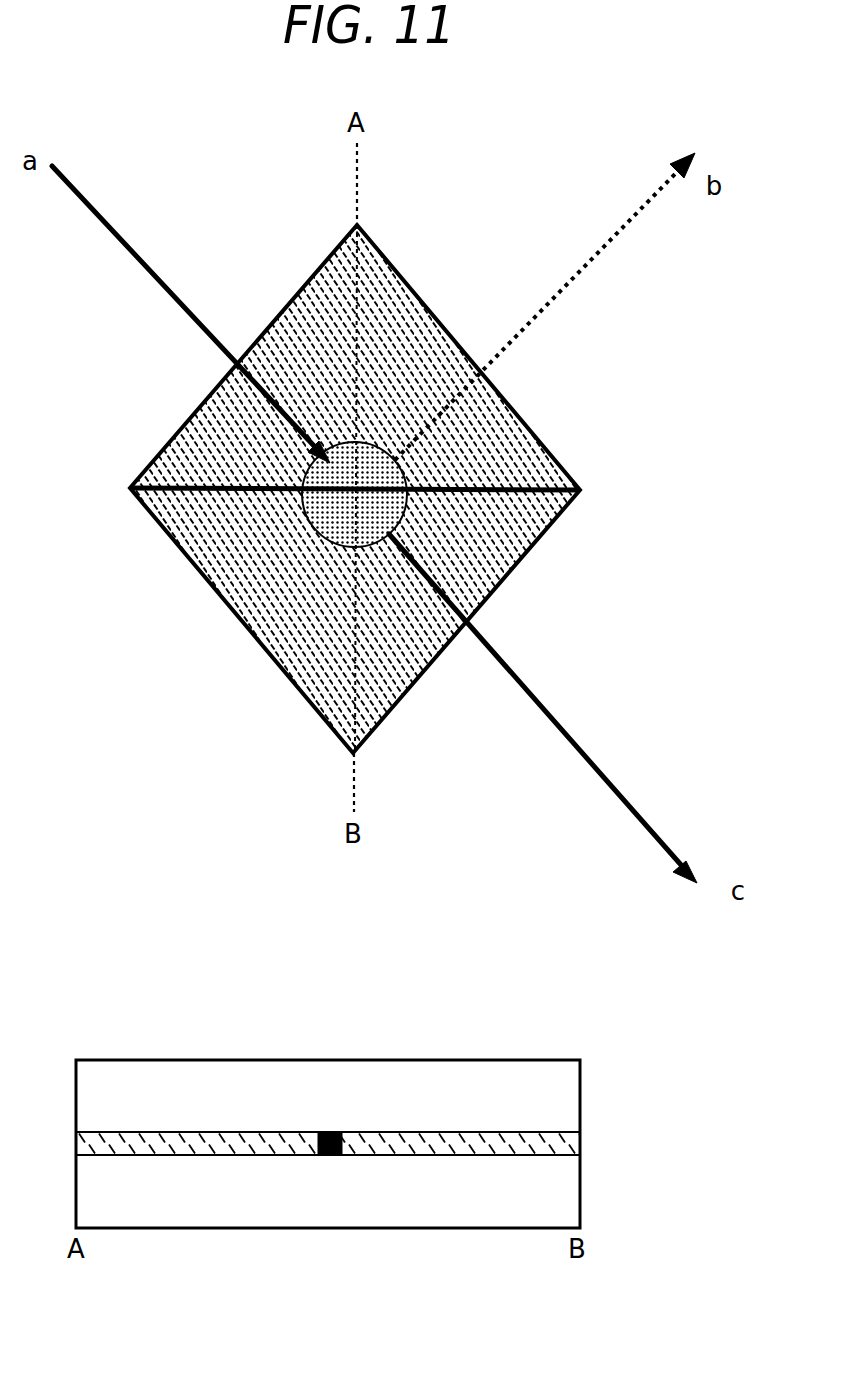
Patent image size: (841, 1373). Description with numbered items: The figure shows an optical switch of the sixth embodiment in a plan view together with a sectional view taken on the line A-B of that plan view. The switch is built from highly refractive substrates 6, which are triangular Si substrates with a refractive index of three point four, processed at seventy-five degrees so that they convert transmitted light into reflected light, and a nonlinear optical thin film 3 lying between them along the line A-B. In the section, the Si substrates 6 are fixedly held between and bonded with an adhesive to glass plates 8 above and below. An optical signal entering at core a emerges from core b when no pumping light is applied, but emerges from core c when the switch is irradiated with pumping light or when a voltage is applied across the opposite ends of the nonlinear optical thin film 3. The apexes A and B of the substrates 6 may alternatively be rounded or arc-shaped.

The nonlinear optical thin film 3 is at (192, 491).
The highly refractive substrates 6 is at (503, 528).
The glass plates 8 is at (538, 1102).